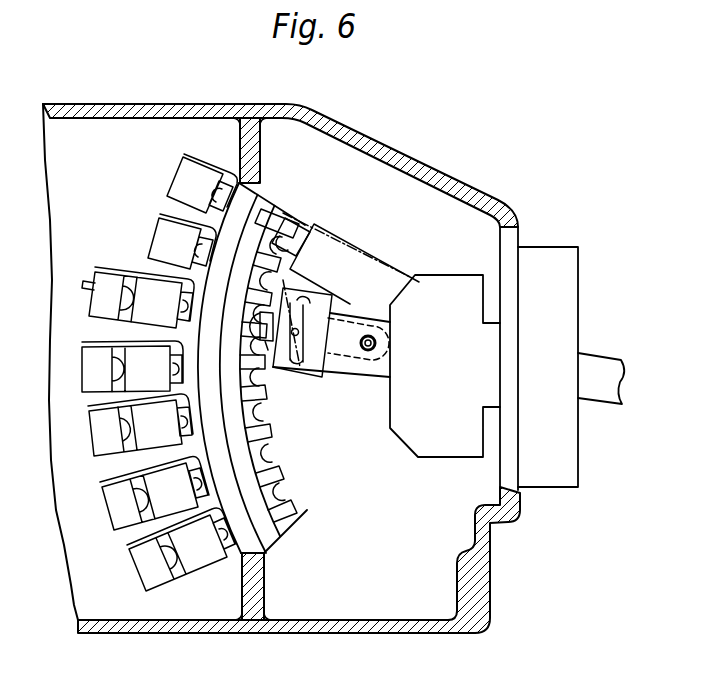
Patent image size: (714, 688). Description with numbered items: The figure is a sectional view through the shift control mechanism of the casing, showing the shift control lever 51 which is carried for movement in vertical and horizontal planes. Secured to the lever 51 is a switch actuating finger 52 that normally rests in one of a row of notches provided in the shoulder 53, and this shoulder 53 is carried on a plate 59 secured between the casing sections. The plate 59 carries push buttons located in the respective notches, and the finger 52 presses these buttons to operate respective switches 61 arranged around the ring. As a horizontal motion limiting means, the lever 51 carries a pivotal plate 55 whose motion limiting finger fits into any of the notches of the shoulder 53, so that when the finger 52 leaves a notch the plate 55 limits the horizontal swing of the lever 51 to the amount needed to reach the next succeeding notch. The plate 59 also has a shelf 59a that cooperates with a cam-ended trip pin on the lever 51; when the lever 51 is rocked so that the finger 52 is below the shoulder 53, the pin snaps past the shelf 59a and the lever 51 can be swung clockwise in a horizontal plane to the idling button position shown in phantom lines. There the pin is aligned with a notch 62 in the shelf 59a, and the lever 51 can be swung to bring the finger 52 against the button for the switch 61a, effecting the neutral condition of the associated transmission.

The shift control lever 51 is at (592, 360).
The switch actuating finger 52 is at (268, 350).
The shoulder 53 is at (305, 512).
The pivotal plate 55 is at (322, 378).
The plate 59 is at (268, 538).
The shelf 59a is at (287, 207).
The switch 61 is at (97, 286).
The switch 61a is at (188, 181).
The notch 62 is at (279, 212).